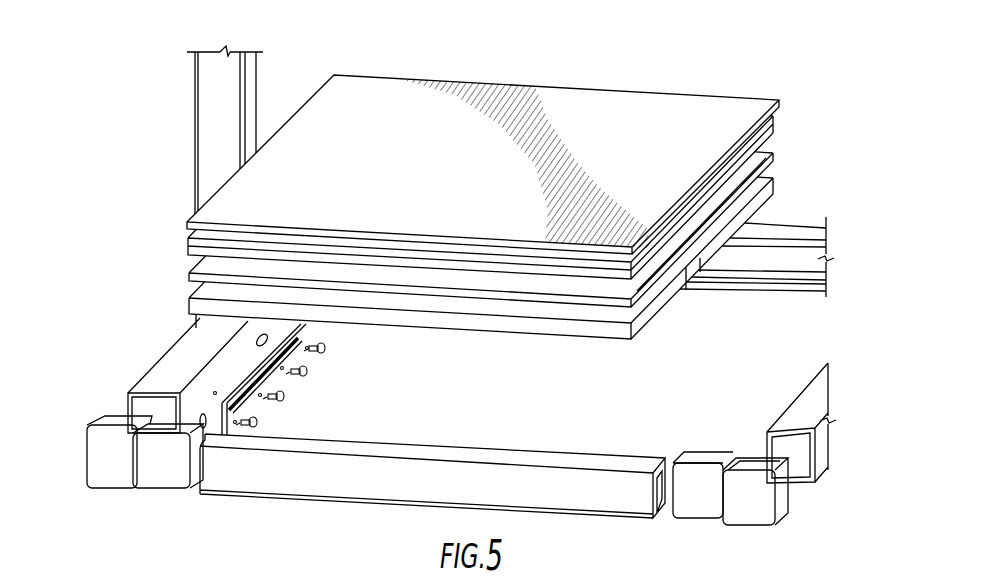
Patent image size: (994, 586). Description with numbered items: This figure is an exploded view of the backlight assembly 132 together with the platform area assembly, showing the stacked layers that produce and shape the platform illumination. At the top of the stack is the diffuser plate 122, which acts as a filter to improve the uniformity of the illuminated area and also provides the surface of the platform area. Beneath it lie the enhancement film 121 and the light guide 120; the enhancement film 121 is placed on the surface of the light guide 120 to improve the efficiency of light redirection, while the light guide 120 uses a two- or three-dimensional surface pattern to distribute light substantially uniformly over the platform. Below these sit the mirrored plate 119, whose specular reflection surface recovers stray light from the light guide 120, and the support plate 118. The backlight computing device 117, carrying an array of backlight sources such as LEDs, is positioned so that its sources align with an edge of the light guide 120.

The backlight computing device 117 is at (307, 352).
The support plate 118 is at (497, 330).
The mirrored plate 119 is at (584, 315).
The light guide 120 is at (614, 288).
The enhancement film 121 is at (224, 222).
The diffuser plate 122 is at (645, 120).
The backlight assembly 132 is at (111, 508).